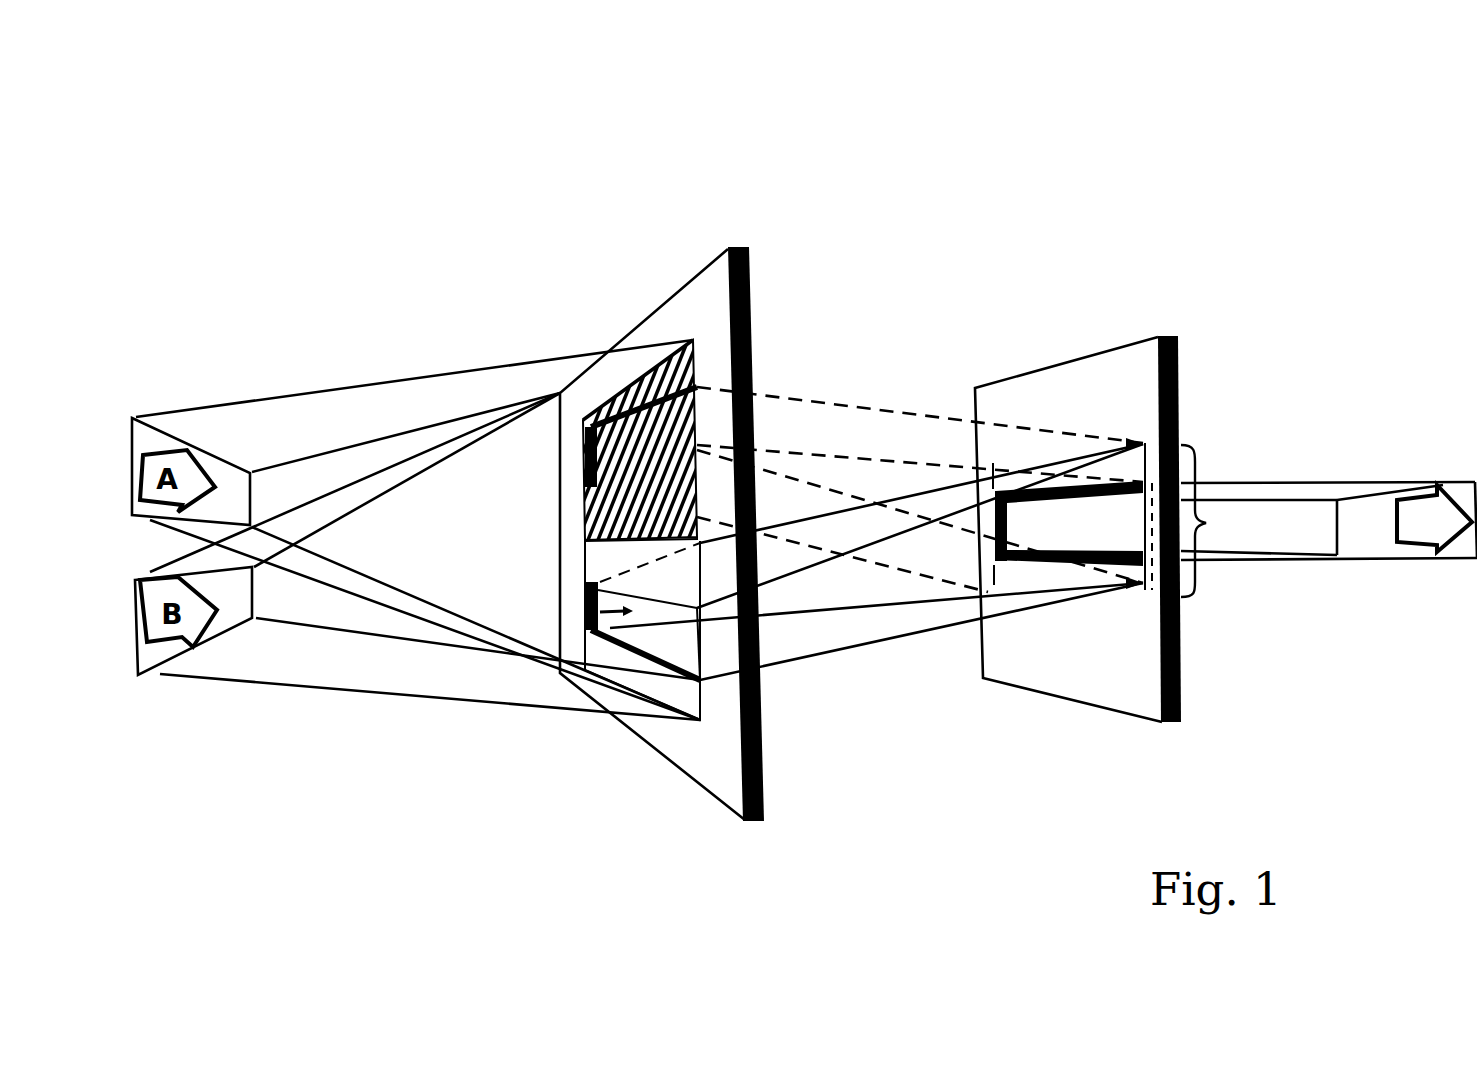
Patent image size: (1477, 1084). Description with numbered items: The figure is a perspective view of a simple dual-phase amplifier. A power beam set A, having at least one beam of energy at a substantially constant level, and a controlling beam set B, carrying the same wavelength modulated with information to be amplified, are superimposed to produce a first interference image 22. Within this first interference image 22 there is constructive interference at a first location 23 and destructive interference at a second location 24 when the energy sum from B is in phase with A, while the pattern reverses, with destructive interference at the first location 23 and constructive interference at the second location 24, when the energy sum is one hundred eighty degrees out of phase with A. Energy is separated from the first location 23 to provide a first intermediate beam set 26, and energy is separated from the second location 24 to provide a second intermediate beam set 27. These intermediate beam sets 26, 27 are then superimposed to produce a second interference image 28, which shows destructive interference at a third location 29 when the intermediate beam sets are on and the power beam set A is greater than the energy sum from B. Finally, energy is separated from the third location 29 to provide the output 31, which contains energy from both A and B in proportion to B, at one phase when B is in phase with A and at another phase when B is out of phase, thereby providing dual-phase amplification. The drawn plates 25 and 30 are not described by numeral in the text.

The first interference image 22 is at (551, 623).
The first location 23 is at (592, 604).
The second location 24 is at (592, 460).
The polarizer plate 25 is at (713, 308).
The first intermediate beam set 26 is at (876, 559).
The second intermediate beam set 27 is at (920, 489).
The second interference image 28 is at (1213, 523).
The third location 29 is at (1060, 527).
The screen plate 30 is at (1075, 658).
The output 31 is at (1329, 521).